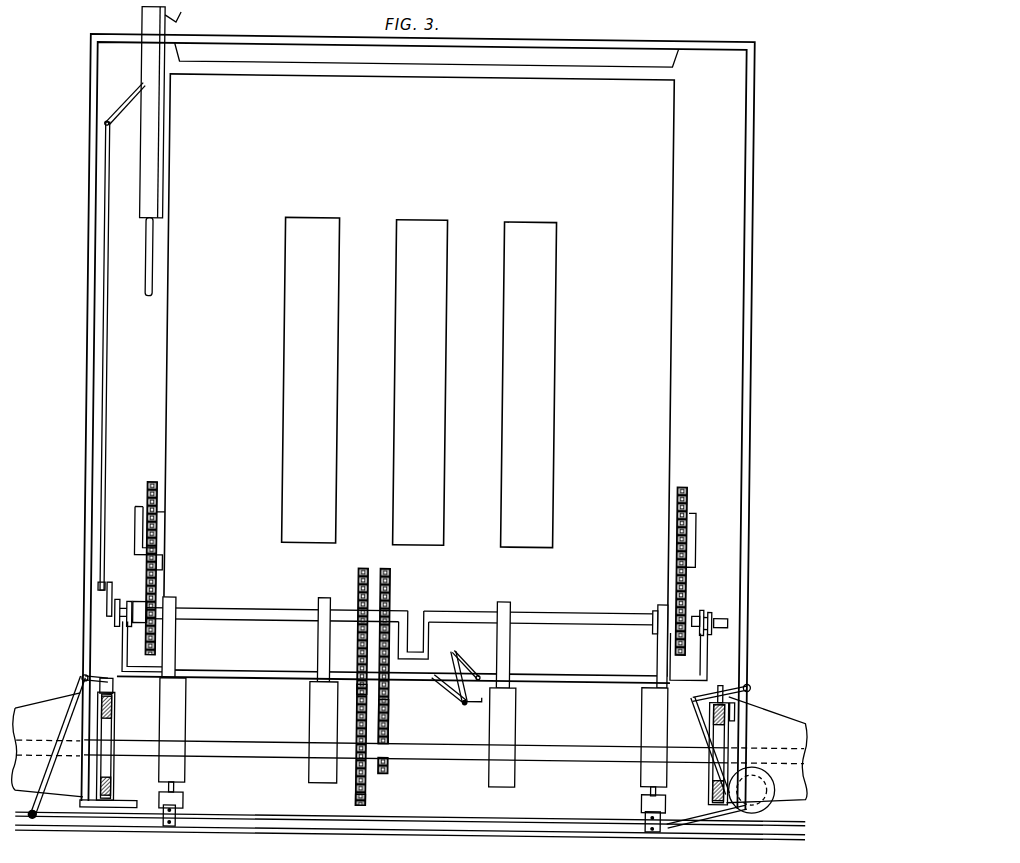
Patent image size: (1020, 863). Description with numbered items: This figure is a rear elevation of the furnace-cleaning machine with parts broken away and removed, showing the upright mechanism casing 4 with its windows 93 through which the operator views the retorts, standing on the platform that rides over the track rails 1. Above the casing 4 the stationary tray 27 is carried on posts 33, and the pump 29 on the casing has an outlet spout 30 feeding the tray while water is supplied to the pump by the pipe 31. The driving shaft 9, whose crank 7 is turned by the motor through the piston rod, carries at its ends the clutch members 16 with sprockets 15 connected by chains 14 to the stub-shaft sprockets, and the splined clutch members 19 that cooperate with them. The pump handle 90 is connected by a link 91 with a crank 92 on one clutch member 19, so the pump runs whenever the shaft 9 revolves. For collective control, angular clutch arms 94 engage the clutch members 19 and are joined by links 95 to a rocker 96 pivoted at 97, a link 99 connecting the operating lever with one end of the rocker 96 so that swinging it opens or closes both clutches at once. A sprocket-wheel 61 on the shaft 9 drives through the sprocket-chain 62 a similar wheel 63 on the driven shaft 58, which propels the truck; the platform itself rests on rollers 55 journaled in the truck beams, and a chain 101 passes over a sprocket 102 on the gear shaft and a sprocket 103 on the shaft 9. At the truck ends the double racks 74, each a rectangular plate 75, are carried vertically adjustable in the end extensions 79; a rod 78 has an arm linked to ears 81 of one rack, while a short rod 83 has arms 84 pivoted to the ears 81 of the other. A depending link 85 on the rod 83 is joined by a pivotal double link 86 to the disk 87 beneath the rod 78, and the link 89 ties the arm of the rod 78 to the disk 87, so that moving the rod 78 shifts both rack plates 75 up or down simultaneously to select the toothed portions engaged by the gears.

The track rails 1 is at (490, 826).
The mechanism casing 4 is at (414, 375).
The crank 7 is at (426, 617).
The driving shaft 9 is at (245, 612).
The chains 14 is at (690, 586).
The sprockets 15 is at (683, 651).
The clutch member 16 is at (699, 612).
The clutch members 19 is at (117, 618).
The tray 27 is at (429, 66).
The pump 29 is at (146, 149).
The outlet spout 30 is at (176, 19).
The pipe 31 is at (143, 279).
The posts 33 is at (91, 385).
The rollers 55 is at (188, 792).
The driven shaft 58 is at (240, 745).
The sprocket-wheel 61 is at (360, 580).
The sprocket-chain 62 is at (360, 692).
The sprocket wheel 63 is at (360, 799).
The double racks 74 is at (712, 780).
The rectangular plate 75 is at (118, 768).
The rod 78 is at (754, 686).
The end extensions 79 is at (409, 747).
The ears 81 is at (117, 688).
The short rod 83 is at (84, 682).
The arms 84 is at (96, 676).
The depending link 85 is at (50, 790).
The pivotal double link 86 is at (727, 681).
The disk 87 is at (751, 790).
The link 89 is at (704, 718).
The operating member or handle 90 is at (126, 106).
The link 91 is at (107, 427).
The crank 92 is at (113, 595).
The openings or windows 93 is at (419, 382).
The clutch arms or collars 94 is at (128, 647).
The links 95 is at (449, 688).
The rocker 96 is at (472, 665).
The pivot 97 is at (456, 650).
The link 99 is at (469, 706).
The chain 101 is at (393, 702).
The sprocket 102 is at (393, 768).
The sprocket 103 is at (394, 574).